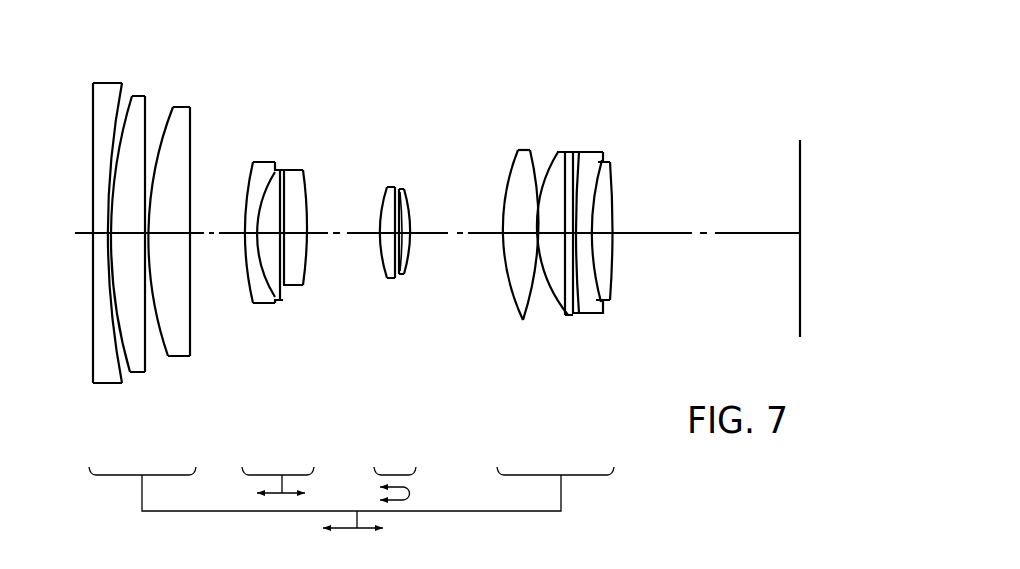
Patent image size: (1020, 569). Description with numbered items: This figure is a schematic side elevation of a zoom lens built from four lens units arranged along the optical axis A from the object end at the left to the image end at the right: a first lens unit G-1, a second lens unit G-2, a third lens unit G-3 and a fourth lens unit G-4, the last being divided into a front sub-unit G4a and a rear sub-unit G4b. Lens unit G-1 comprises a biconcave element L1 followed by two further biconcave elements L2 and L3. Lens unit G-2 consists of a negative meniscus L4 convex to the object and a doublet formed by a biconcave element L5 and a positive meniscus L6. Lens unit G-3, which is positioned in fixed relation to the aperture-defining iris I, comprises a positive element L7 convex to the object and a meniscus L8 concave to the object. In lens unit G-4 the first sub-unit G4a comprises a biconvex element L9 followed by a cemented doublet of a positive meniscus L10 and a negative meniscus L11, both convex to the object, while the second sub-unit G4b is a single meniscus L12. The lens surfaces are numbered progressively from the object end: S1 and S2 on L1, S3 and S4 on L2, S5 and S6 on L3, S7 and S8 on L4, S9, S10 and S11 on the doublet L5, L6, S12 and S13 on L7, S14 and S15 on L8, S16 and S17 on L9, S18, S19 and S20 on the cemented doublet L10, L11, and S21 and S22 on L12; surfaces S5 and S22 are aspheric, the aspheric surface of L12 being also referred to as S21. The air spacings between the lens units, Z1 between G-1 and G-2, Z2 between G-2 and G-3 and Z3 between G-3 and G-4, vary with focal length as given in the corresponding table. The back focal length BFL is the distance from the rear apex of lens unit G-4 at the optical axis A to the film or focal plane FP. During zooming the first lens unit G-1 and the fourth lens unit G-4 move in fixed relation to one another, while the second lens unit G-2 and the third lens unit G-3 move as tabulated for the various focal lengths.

The first lens unit G-1 is at (202, 47).
The second lens unit G-2 is at (317, 47).
The third lens unit G-3 is at (420, 47).
The fourth lens unit G-4 is at (620, 47).
The first sub lens unit of fourth lens unit G4a is at (600, 429).
The second sub lens unit of fourth lens unit G4b is at (627, 429).
The biconcave lens element L1 is at (78, 262).
The biconcave lens element L2 is at (135, 260).
The biconcave lens element L3 is at (191, 245).
The negative meniscus lens element L4 is at (240, 239).
The biconcave lens element L5 is at (292, 247).
The positive meniscus lens element L6 is at (318, 242).
The positive lens element L7 is at (386, 252).
The meniscus lens element L8 is at (430, 234).
The biconvex lens element L9 is at (499, 236).
The positive meniscus lens element L10 is at (558, 240).
The negative meniscus lens element L11 is at (625, 241).
The meniscus lens element L12 is at (634, 212).
The lens element surface S1 is at (92, 358).
The lens element surface S2 is at (120, 358).
The lens element surface S3 is at (125, 375).
The lens element surface S4 is at (148, 375).
The aspheric lens element surface S5 is at (167, 357).
The lens element surface S6 is at (190, 343).
The lens element surface S7 is at (243, 278).
The lens element surface S8 is at (270, 298).
The lens element surface S9 is at (289, 292).
The lens element surface S10 is at (293, 293).
The lens element surface S11 is at (310, 267).
The lens element surface S12 is at (380, 262).
The lens element surface S13 is at (394, 279).
The lens element surface S14 is at (406, 276).
The lens element surface S15 is at (413, 247).
The lens element surface S16 is at (505, 263).
The lens element surface S17 is at (535, 287).
The lens element surface S18 is at (550, 302).
The lens element surface S19 is at (568, 288).
The lens element surface S20 is at (587, 312).
The aspheric lens element surface S21 is at (605, 278).
The aspheric lens element surface S22 is at (607, 259).
The first lens unit spacing Z1 is at (216, 222).
The second lens unit spacing Z2 is at (343, 222).
The third lens unit spacing Z3 is at (456, 220).
The back focal length BFL is at (706, 219).
The focal plane FP is at (797, 152).
The optical axis A is at (737, 237).
The iris I is at (375, 205).